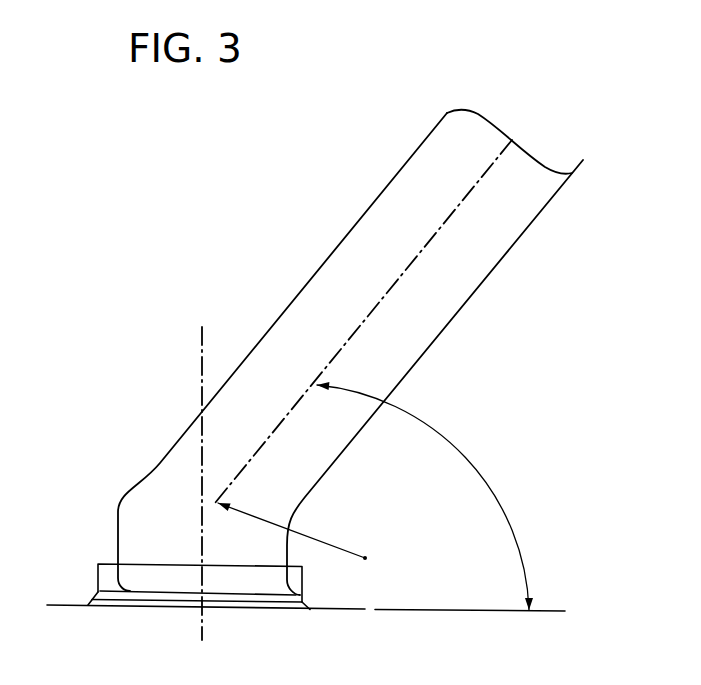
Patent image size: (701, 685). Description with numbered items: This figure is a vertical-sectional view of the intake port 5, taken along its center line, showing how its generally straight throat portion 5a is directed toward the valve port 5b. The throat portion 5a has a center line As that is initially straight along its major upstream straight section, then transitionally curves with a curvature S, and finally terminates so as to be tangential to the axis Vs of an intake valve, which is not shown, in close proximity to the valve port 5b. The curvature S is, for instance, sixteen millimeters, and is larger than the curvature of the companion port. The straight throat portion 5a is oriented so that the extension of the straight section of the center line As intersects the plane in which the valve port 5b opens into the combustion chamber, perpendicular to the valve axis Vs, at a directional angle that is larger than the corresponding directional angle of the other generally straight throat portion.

The intake port 5 is at (331, 377).
The generally straight throat portion 5a is at (241, 362).
The valve port 5b is at (170, 600).
The center line As is at (375, 305).
The axis of the intake valve Vs is at (203, 631).
The curvature S is at (272, 523).